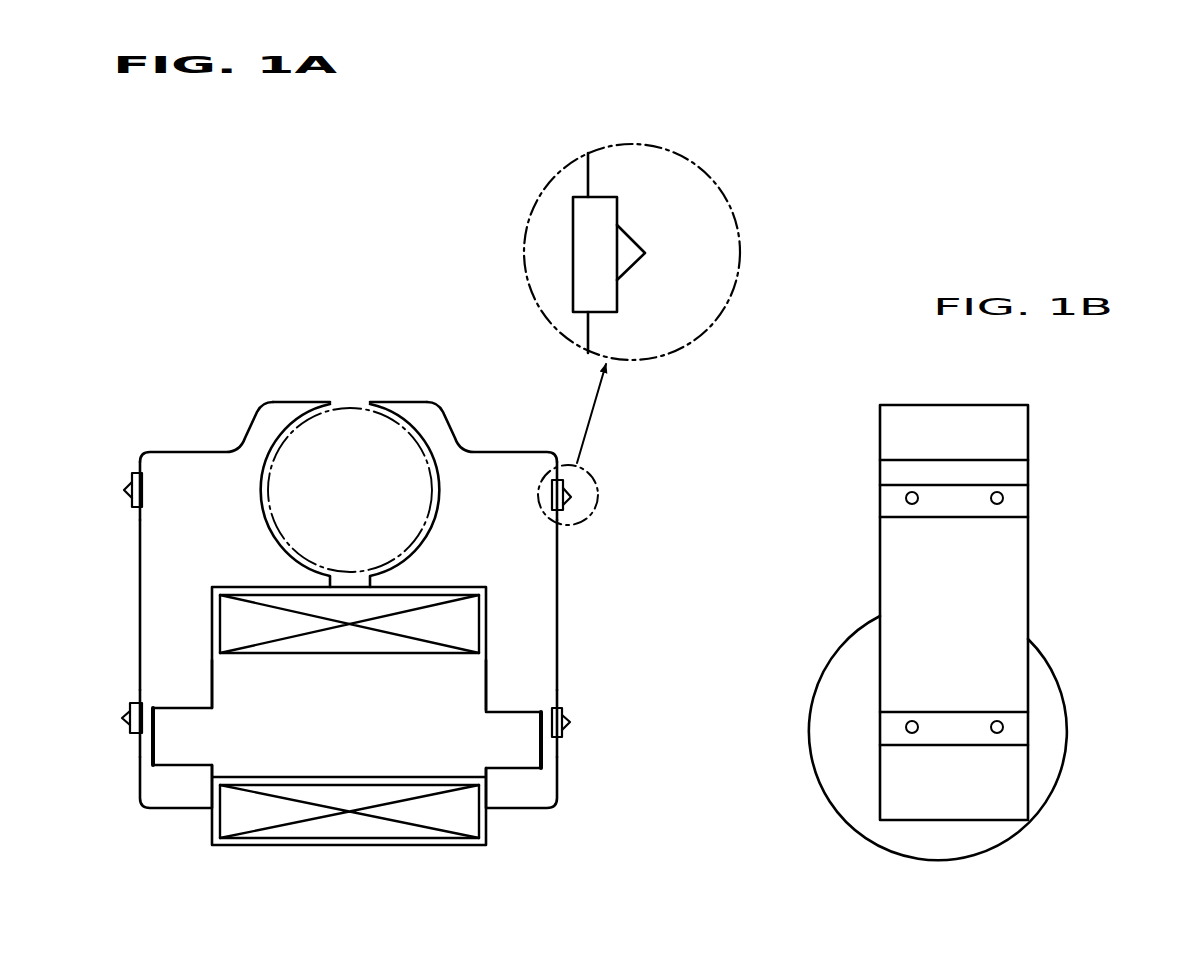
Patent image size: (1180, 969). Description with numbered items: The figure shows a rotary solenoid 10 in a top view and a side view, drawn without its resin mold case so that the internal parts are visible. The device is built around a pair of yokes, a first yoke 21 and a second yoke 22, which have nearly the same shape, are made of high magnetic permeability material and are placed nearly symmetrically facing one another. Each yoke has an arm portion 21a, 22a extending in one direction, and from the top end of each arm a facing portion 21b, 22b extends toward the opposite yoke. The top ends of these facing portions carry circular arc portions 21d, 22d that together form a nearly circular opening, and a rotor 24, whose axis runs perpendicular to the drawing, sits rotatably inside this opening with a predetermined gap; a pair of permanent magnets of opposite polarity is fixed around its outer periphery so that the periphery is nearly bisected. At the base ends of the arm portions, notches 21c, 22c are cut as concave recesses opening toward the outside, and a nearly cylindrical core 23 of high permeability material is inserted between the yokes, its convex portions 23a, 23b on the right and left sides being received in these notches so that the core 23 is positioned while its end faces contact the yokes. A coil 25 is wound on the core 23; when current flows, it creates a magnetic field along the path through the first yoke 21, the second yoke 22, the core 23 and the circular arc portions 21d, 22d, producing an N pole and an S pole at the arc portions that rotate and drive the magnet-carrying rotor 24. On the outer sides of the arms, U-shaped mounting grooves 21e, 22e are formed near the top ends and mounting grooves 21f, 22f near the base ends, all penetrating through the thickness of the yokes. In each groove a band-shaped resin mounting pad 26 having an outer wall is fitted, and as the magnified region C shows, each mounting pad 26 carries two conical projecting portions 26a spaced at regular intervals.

In FIG. 1A, the rotary solenoid 10 is at (219, 363).
In FIG. 1A, the first yoke 21 is at (557, 585).
In FIG. 1B, the first yoke 21 is at (1014, 611).
In FIG. 1A, the arm portion 21a is at (557, 637).
In FIG. 1B, the arm portion 21a is at (1009, 614).
In FIG. 1A, the facing portion 21b is at (500, 454).
In FIG. 1A, the notch 21c is at (553, 766).
In FIG. 1A, the circular arc portion 21d is at (398, 400).
In FIG. 1B, the circular arc portion 21d is at (1001, 431).
In FIG. 1A, the mounting groove 21e is at (583, 510).
In FIG. 1B, the mounting groove 21e is at (997, 516).
In FIG. 1A, the mounting groove 21f is at (564, 710).
In FIG. 1B, the mounting groove 21f is at (1014, 753).
In FIG. 1A, the second yoke 22 is at (141, 583).
In FIG. 1B, the second yoke 22 is at (1030, 582).
In FIG. 1A, the arm portion 22a is at (141, 632).
In FIG. 1B, the arm portion 22a is at (1028, 620).
In FIG. 1A, the facing portion 22b is at (176, 454).
In FIG. 1A, the notch 22c is at (145, 765).
In FIG. 1A, the circular arc portion 22d is at (296, 400).
In FIG. 1B, the circular arc portion 22d is at (1030, 425).
In FIG. 1A, the mounting groove 22e is at (138, 502).
In FIG. 1B, the mounting groove 22e is at (1030, 510).
In FIG. 1A, the mounting groove 22f is at (130, 707).
In FIG. 1B, the mounting groove 22f is at (1028, 735).
In FIG. 1A, the core 23 is at (507, 760).
In FIG. 1A, the convex portion 23a is at (515, 714).
In FIG. 1A, the convex portion 23b is at (180, 712).
In FIG. 1A, the rotor 24 is at (347, 406).
In FIG. 1A, the coil 25 is at (357, 845).
In FIG. 1B, the coil 25 is at (830, 795).
In FIG. 1A, the mounting pad 26 is at (132, 485).
In FIG. 1B, the mounting pad 26 is at (880, 495).
In FIG. 1A, the projecting portion 26a is at (635, 247).
In FIG. 1B, the projecting portion 26a is at (912, 506).
In FIG. 1A, the magnified region C is at (600, 490).